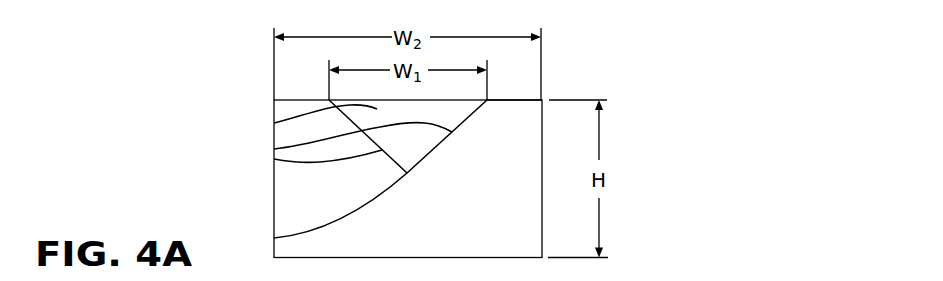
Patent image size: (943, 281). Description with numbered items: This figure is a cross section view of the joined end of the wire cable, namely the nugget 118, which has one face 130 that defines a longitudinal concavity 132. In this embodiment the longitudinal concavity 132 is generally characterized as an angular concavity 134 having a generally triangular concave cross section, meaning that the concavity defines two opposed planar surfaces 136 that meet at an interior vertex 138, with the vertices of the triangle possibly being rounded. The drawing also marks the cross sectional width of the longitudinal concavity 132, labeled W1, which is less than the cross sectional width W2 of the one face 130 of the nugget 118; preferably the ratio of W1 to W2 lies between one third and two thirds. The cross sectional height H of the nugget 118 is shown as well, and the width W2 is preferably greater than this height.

The nugget 118 is at (213, 68).
The one face of the nugget 130 is at (512, 100).
The longitudinal concavity 132 is at (418, 108).
The angular concavity 134 is at (274, 123).
The opposed planar surfaces 136 is at (274, 149).
The interior vertex 138 is at (274, 238).